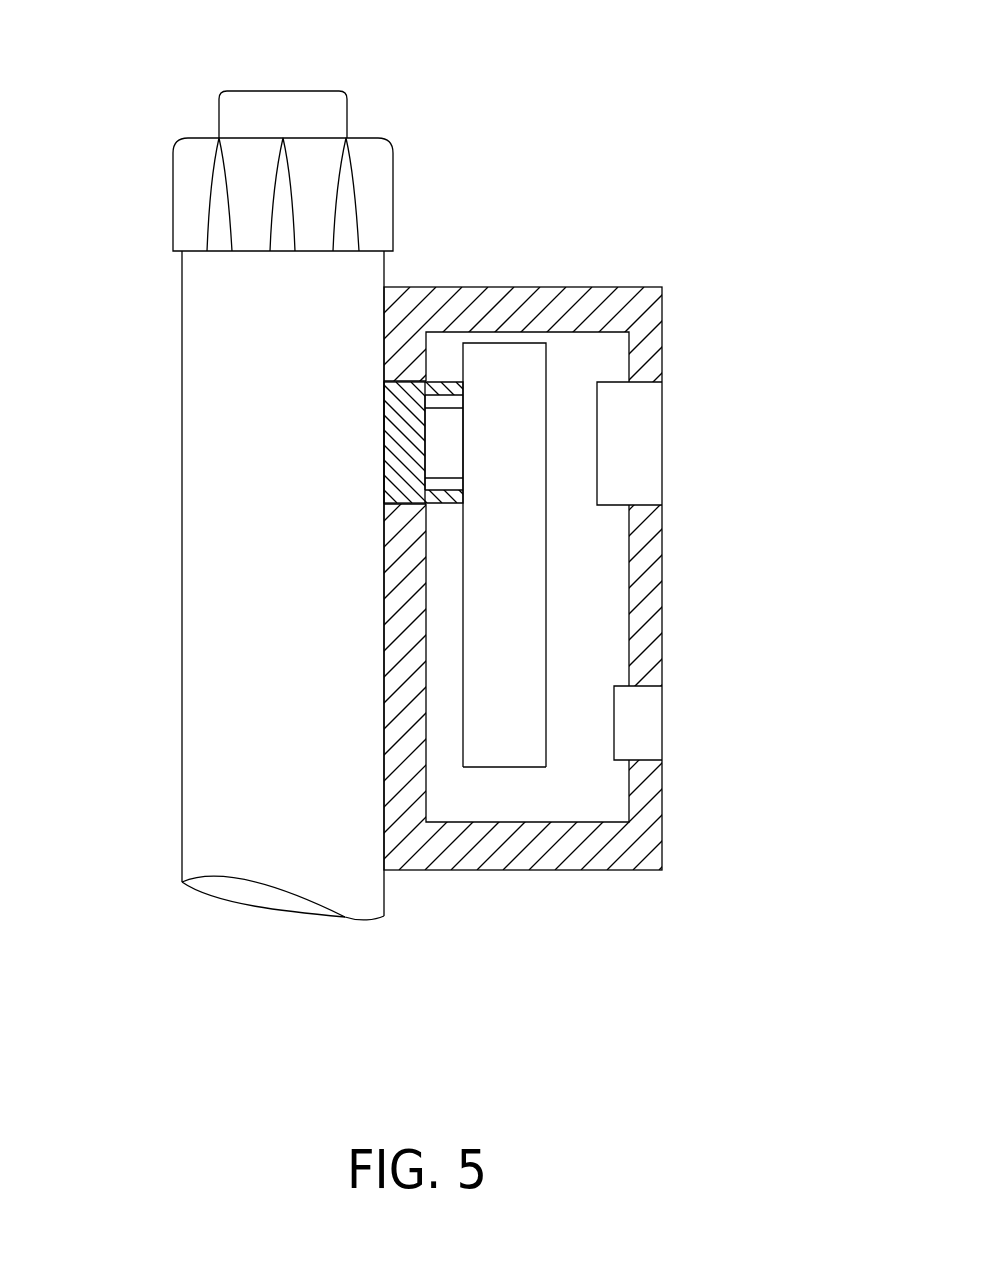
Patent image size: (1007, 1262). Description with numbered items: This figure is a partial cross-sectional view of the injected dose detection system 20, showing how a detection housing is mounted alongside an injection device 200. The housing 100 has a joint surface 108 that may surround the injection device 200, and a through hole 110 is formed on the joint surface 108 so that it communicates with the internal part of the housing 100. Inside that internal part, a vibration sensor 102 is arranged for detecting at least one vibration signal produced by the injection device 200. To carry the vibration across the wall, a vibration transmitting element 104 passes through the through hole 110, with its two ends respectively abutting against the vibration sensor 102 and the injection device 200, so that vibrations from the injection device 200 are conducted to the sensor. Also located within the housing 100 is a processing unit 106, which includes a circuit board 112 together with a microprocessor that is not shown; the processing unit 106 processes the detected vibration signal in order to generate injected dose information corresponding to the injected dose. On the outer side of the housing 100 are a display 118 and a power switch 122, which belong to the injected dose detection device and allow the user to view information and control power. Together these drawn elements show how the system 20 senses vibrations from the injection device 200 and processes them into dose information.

The injected dose detection system 20 is at (590, 112).
The housing 100 is at (618, 303).
The vibration sensor 102 is at (443, 412).
The vibration transmitting element 104 is at (404, 398).
The processing unit 106 is at (550, 593).
The joint surface 108 is at (382, 792).
The through hole 110 is at (396, 373).
The circuit board 112 is at (513, 745).
The display 118 is at (638, 438).
The power switch 122 is at (643, 723).
The injection device 200 is at (210, 472).